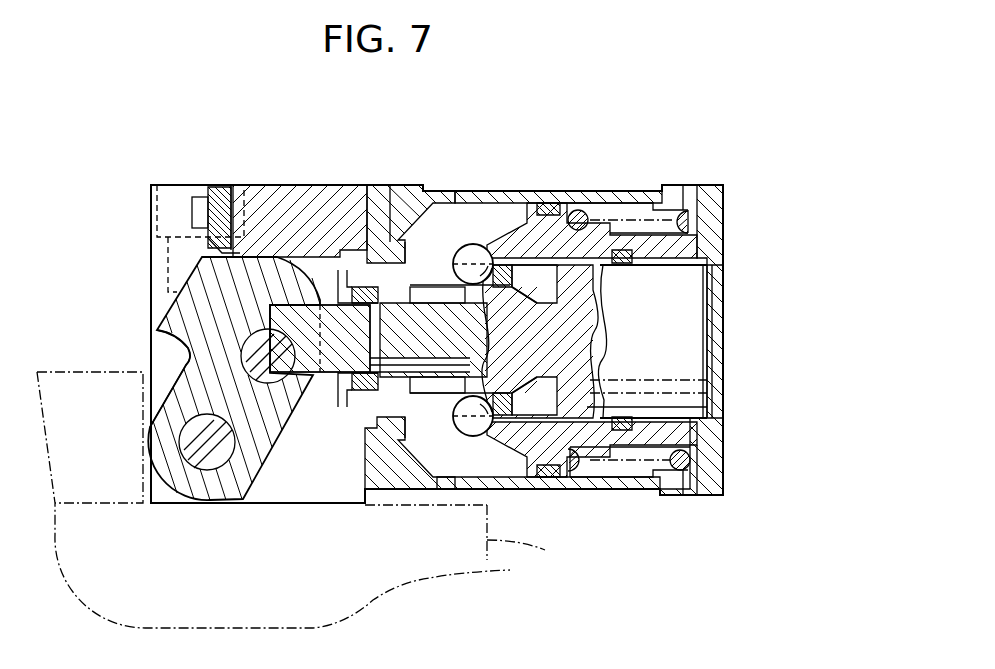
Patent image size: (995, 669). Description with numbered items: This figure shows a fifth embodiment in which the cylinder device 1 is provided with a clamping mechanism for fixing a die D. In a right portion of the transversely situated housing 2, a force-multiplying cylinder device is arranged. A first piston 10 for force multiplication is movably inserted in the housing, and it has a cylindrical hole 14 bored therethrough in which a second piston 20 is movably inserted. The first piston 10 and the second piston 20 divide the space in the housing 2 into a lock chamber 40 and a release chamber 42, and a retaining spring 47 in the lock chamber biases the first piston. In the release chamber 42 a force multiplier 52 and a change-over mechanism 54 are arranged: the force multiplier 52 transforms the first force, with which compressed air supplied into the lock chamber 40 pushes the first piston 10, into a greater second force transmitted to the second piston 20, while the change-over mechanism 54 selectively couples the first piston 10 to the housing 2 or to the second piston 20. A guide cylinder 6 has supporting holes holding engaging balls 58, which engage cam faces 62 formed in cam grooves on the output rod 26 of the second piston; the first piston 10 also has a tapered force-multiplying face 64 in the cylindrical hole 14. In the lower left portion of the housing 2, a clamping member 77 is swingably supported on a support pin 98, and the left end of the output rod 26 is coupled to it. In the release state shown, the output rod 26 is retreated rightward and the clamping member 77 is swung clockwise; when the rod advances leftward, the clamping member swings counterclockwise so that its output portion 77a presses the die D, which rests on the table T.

The cylinder device 1 is at (607, 168).
The housing 2 is at (489, 190).
The guide cylinder 6 is at (441, 275).
The first piston 10 is at (565, 192).
The cylindrical hole 14 is at (604, 272).
The second piston 20 is at (712, 336).
The output rod 26 is at (325, 382).
The lock chamber 40 is at (636, 472).
The release chamber 42 is at (451, 467).
The retaining spring 47 is at (677, 492).
The force multiplier 52 is at (556, 402).
The change-over mechanism 54 is at (440, 435).
The engaging balls 58 is at (473, 243).
The cam face 62 is at (508, 300).
The force-multiplying face 64 is at (535, 420).
The clamping member 77 is at (183, 279).
The output portion 77a is at (158, 334).
The support pin 98 is at (213, 503).
The die D is at (72, 372).
The table T is at (554, 550).